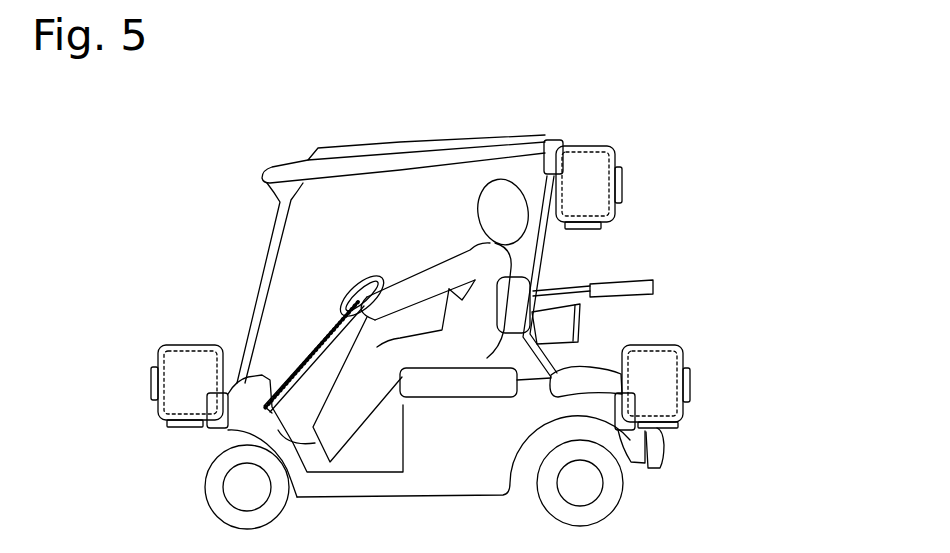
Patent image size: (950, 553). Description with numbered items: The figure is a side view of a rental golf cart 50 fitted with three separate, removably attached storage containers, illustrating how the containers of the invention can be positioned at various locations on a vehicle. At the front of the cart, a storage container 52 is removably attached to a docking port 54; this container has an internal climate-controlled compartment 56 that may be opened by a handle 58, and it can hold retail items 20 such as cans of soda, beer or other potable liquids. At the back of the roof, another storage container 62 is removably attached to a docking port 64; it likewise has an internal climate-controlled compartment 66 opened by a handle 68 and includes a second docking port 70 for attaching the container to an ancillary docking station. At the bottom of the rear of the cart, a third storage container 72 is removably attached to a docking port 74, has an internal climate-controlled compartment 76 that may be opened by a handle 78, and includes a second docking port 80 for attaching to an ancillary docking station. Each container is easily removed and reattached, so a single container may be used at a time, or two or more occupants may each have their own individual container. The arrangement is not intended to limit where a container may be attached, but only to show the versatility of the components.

The rental golf cart 50 is at (157, 192).
The storage container 52 is at (155, 402).
The docking port 54 is at (215, 417).
The internal climate-controlled compartment 56 is at (193, 367).
The handle 58 is at (151, 388).
The retail items 20 is at (170, 430).
The storage container 62 is at (634, 164).
The docking port 64 is at (557, 152).
The internal climate-controlled compartment 66 is at (587, 168).
The handle 68 is at (623, 182).
The second docking port 70 is at (598, 230).
The storage container 72 is at (721, 426).
The docking port 74 is at (632, 417).
The internal climate-controlled compartment 76 is at (670, 367).
The handle 78 is at (692, 393).
The second docking port 80 is at (667, 425).